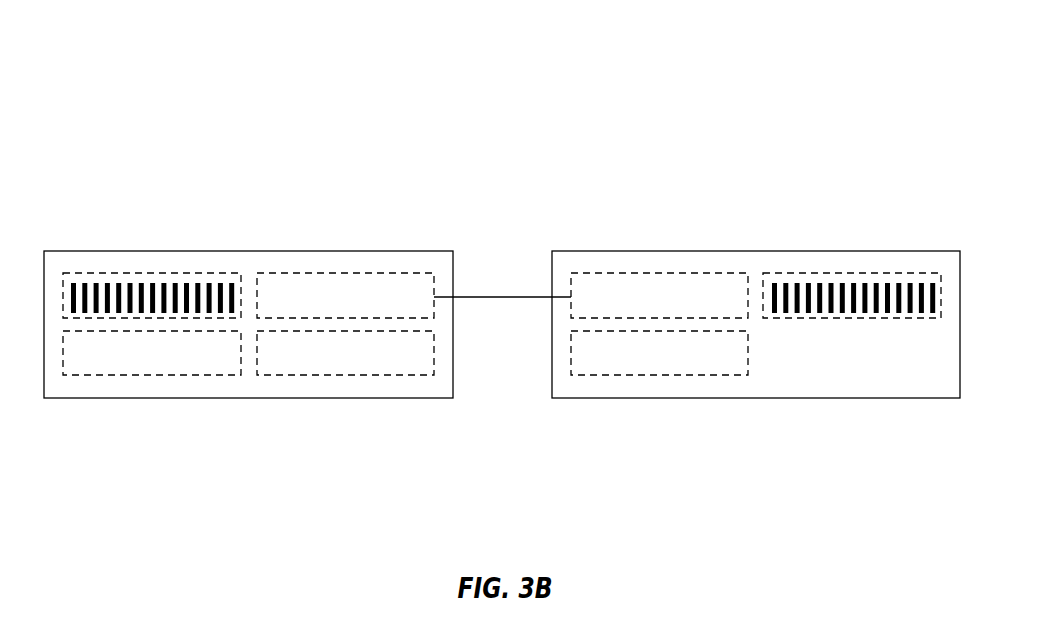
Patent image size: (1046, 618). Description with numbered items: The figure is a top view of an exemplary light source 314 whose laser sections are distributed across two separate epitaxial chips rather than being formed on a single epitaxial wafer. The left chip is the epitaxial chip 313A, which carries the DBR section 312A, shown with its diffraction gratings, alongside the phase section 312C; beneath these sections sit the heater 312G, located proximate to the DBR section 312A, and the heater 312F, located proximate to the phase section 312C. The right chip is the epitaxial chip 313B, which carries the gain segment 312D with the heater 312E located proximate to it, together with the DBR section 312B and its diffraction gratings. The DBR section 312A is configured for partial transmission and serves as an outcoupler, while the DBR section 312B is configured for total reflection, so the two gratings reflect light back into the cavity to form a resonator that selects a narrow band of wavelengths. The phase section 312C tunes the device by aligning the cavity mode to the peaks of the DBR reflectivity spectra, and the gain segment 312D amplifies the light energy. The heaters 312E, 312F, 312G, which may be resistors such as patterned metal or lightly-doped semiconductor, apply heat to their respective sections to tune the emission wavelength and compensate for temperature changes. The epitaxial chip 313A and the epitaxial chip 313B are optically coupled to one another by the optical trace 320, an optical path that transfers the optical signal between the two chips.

The light source 314 is at (82, 143).
The epitaxial chip 313A is at (242, 252).
The epitaxial chip 313B is at (753, 252).
The DBR section 312A is at (148, 273).
The DBR section 312B is at (888, 273).
The phase section 312C is at (353, 273).
The gain segment 312D is at (658, 273).
The heater 312E is at (677, 375).
The heater 312F is at (377, 375).
The heater 312G is at (152, 375).
The optical trace 320 is at (505, 297).